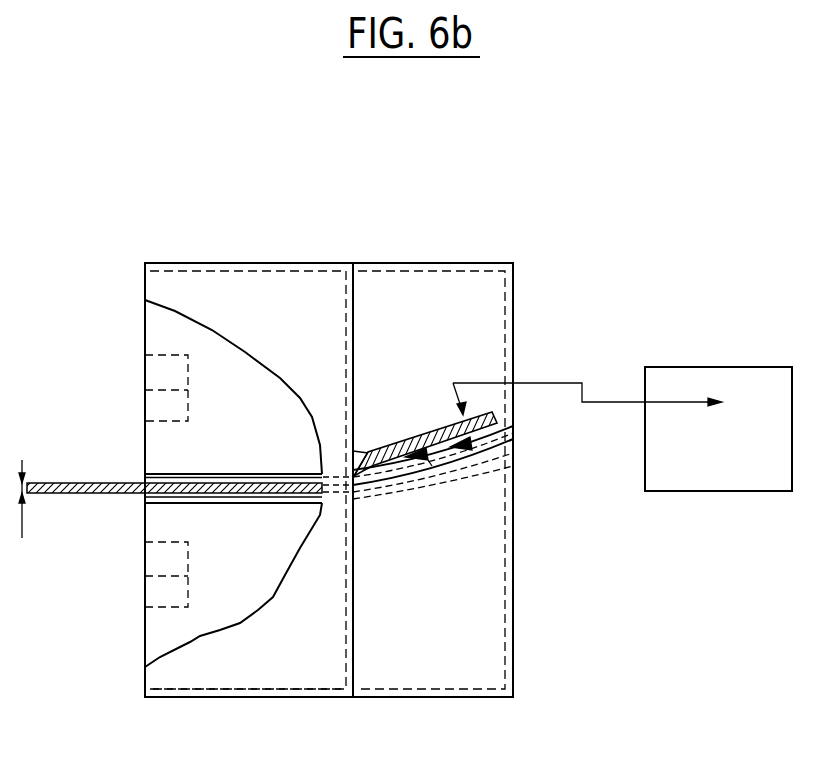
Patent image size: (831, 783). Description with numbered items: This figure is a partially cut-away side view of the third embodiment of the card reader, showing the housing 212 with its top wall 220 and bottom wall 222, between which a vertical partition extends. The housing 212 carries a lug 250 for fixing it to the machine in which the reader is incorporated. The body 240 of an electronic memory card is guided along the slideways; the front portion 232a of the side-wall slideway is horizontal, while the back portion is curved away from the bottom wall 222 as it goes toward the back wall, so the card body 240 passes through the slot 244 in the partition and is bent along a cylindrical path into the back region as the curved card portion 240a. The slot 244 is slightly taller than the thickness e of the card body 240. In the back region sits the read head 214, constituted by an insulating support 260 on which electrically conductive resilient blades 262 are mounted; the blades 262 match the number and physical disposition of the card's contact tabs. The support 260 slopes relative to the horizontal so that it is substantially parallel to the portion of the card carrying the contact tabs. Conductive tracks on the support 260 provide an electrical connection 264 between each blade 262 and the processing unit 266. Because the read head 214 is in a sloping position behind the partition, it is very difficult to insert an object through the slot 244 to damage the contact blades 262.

The housing 212 is at (258, 258).
The top wall 220 is at (310, 270).
The bottom wall 222 is at (267, 695).
The lug 250 is at (150, 373).
The front portion of slideway 232a is at (267, 500).
The card body 240 is at (105, 481).
The thickness of the card body e is at (28, 499).
The bent strip portion 240a is at (514, 438).
The read/write head 214 is at (426, 426).
The insulating support 260 is at (407, 444).
The electrically conductive resilient blade 262 is at (410, 468).
The slot 244 is at (386, 500).
The electrical connection 264 is at (633, 405).
The processing unit 266 is at (743, 466).